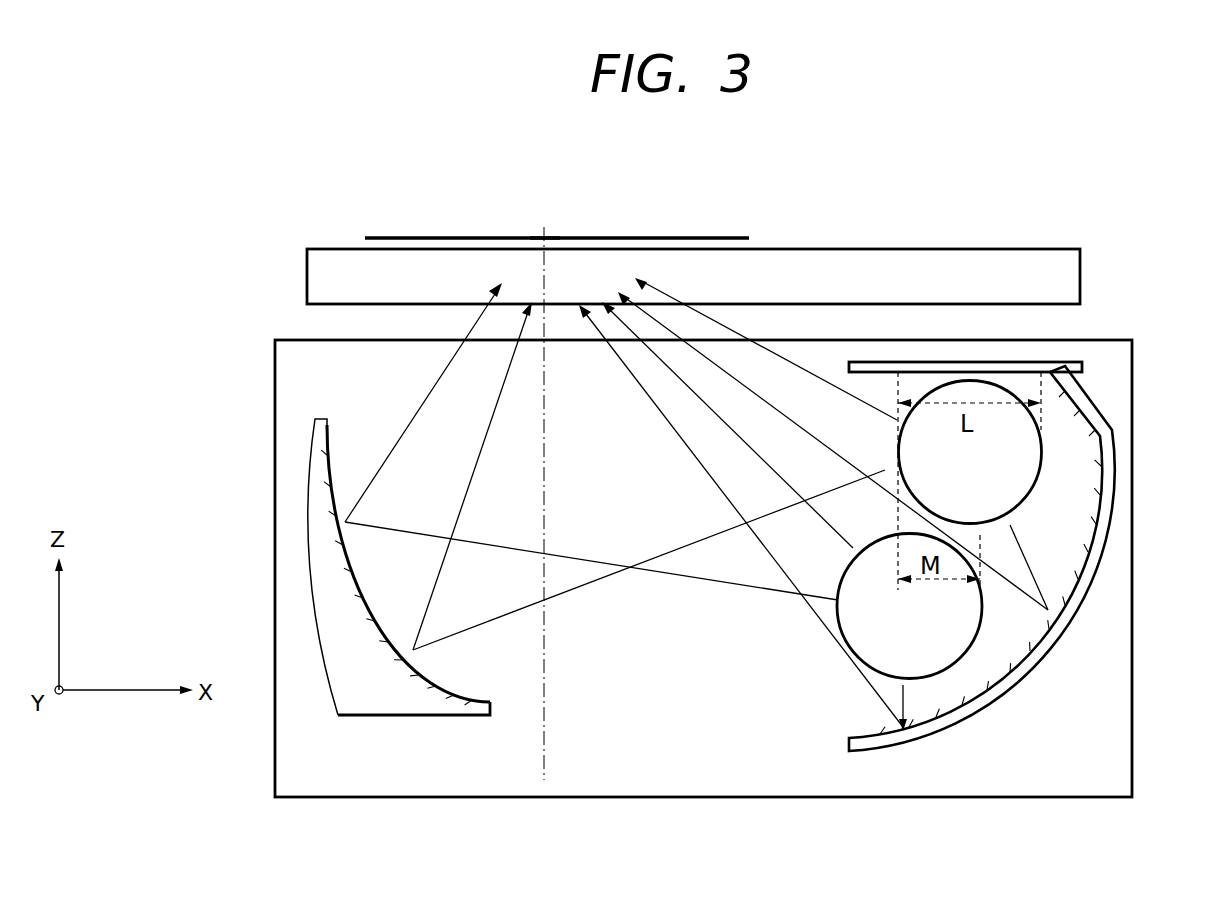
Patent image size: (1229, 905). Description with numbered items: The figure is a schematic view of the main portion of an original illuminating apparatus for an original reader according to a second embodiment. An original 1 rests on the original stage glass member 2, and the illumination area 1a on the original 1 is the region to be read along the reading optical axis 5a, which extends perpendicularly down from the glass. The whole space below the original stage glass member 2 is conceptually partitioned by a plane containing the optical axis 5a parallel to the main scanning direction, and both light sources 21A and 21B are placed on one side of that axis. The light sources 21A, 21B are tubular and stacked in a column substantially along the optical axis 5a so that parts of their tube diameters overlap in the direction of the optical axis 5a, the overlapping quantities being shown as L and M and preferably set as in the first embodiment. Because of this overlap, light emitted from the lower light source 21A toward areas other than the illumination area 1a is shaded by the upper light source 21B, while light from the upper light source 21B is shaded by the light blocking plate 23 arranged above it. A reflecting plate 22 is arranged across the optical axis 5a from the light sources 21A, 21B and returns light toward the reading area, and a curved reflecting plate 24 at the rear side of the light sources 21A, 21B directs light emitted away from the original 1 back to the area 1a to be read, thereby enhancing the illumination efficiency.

The original 1 is at (718, 238).
The illumination area 1a is at (547, 238).
The original stage glass member 2 is at (975, 262).
The optical axis 5a is at (546, 752).
The light source 21A is at (958, 635).
The light source 21B is at (1028, 477).
The reflecting plate 22 is at (398, 718).
The light blocking plate 23 is at (1085, 368).
The reflecting plate 24 is at (953, 723).